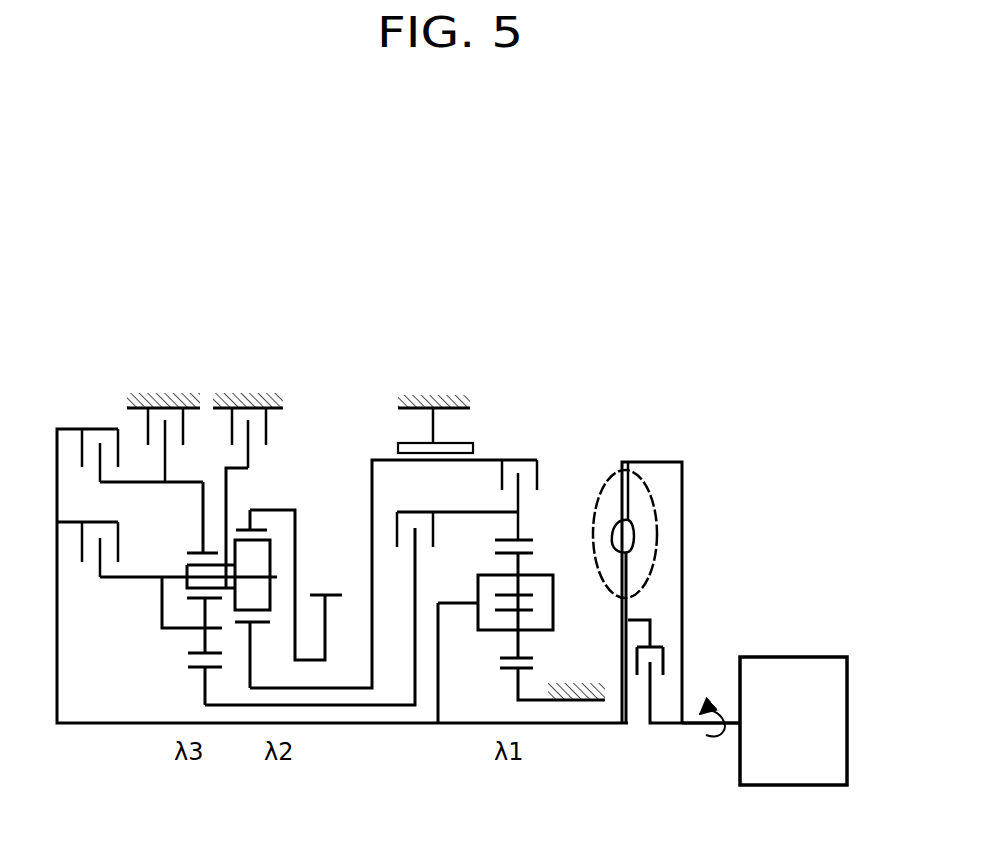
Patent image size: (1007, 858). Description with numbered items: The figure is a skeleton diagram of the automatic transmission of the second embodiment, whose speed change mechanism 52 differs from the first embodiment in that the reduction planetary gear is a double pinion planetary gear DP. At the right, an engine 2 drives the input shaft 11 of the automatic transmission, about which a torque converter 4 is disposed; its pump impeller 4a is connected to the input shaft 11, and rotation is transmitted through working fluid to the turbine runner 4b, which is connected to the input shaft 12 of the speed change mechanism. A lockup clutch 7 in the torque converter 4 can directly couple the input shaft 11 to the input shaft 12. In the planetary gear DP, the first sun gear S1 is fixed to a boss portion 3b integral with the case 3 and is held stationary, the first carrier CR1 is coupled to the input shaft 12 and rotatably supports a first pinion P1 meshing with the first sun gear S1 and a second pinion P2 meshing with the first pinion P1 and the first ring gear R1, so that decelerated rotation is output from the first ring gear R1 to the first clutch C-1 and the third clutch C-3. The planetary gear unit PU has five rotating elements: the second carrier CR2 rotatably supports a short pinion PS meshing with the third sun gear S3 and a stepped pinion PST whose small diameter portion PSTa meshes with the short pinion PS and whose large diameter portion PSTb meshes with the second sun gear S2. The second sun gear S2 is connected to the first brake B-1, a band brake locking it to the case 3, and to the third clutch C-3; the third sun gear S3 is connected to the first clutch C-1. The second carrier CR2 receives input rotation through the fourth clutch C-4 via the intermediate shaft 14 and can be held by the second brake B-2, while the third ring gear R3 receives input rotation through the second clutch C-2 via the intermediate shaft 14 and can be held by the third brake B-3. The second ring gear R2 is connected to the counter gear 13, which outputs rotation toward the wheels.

The input shaft of the speed change mechanism 12 is at (592, 323).
The speed change mechanism 52 is at (337, 417).
The engine 2 is at (797, 656).
The case 3 is at (456, 410).
The boss portion 3b is at (580, 683).
The torque converter 4 is at (638, 443).
The pump impeller 4a is at (612, 484).
The turbine runner 4b is at (635, 471).
The lockup clutch 7 is at (670, 633).
The input shaft of the automatic transmission 11 is at (693, 725).
The counter gear 13 is at (330, 593).
The intermediate shaft 14 is at (360, 724).
The first clutch C-1 is at (457, 515).
The second clutch C-2 is at (137, 440).
The third clutch C-3 is at (516, 488).
The fourth clutch C-4 is at (167, 534).
The first brake B-1 is at (434, 405).
The second brake B-2 is at (248, 478).
The third brake B-3 is at (163, 425).
The double pinion planetary gear DP is at (556, 526).
The planetary gear unit PU is at (279, 482).
The stepped pinion PST is at (273, 557).
The small diameter portion of the stepped pinion PSTa is at (195, 563).
The large diameter portion of the stepped pinion PSTb is at (268, 612).
The short pinion PS is at (197, 650).
The first carrier CR1 is at (553, 612).
The second carrier CR2 is at (162, 600).
The first ring gear R1 is at (510, 540).
The second ring gear R2 is at (240, 528).
The third ring gear R3 is at (204, 549).
The first sun gear S1 is at (510, 669).
The second sun gear S2 is at (238, 626).
The third sun gear S3 is at (192, 669).
The first pinion P1 is at (529, 659).
The second pinion P2 is at (508, 556).